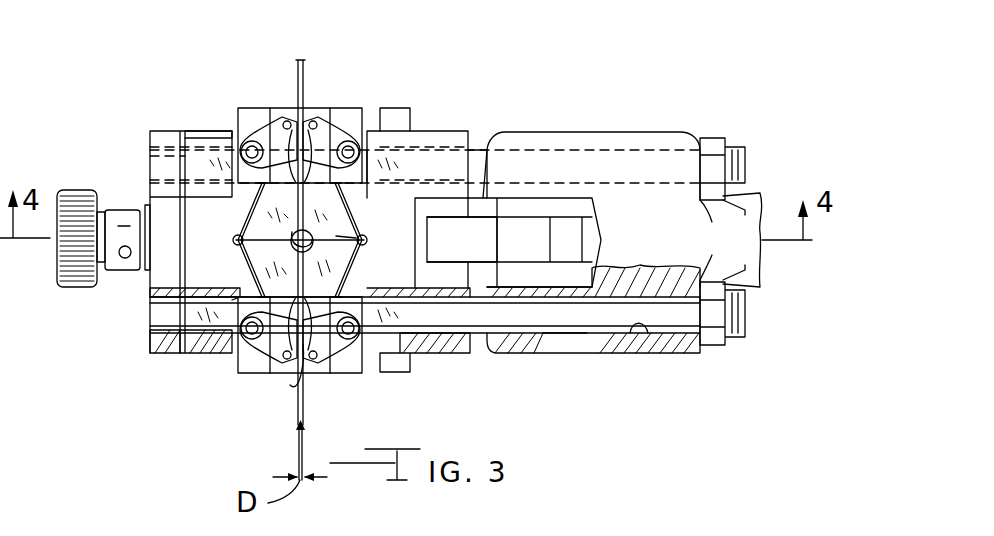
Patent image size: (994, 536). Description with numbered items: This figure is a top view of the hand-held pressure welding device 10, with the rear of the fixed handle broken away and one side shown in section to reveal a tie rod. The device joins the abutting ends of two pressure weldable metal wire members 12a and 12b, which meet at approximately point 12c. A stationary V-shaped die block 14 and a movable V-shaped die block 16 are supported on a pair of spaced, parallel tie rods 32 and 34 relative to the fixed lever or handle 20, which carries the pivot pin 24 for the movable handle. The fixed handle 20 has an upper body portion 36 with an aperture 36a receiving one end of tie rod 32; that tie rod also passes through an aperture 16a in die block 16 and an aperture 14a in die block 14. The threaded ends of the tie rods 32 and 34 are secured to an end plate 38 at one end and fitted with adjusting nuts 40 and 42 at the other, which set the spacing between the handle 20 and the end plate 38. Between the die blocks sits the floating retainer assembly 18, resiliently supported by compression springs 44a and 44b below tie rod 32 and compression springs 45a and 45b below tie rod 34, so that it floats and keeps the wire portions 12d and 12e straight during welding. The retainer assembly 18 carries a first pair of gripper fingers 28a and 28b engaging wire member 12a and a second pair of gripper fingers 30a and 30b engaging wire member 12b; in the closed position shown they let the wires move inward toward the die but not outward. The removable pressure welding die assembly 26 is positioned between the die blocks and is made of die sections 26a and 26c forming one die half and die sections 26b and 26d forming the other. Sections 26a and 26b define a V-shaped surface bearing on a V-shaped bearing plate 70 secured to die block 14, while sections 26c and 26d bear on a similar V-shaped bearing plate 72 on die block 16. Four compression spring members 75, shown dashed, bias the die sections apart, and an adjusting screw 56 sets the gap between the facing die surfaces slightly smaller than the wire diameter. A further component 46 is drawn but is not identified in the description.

The pressure welding device 10 is at (580, 95).
The wire member 12a is at (305, 420).
The wire member 12b is at (305, 70).
The abutment point 12c is at (352, 240).
The wire portion 12d is at (278, 372).
The wire portion 12e is at (370, 182).
The stationary V-shaped die block 14 is at (190, 130).
The aperture 14a is at (186, 353).
The movable V-shaped die block 16 is at (448, 131).
The aperture 16a is at (440, 320).
The floating retainer assembly 18 is at (258, 108).
The fixed lever or handle 20 is at (652, 130).
The pivot pin 24 is at (570, 238).
The pressure welding die assembly 26 is at (248, 225).
The die section 26a is at (262, 202).
The die section 26b is at (262, 270).
The die section 26c is at (340, 204).
The die section 26d is at (342, 268).
The gripper finger 28a is at (268, 345).
The gripper finger 28b is at (340, 345).
The gripper finger 30a is at (250, 140).
The gripper finger 30b is at (325, 145).
The tie rod 32 is at (510, 318).
The tie rod 34 is at (476, 160).
The upper body portion 36 is at (700, 340).
The aperture 36a is at (638, 320).
The end plate 38 is at (163, 268).
The adjusting nut 40 is at (730, 338).
The adjusting nut 42 is at (742, 150).
The compression spring 44a is at (232, 345).
The compression spring 44b is at (462, 239).
The compression spring 45a is at (205, 145).
The compression spring 45b is at (396, 143).
The adjusting block 46 is at (118, 215).
The adjusting screw 56 is at (73, 290).
The V-shaped bearing plate 70 is at (238, 245).
The V-shaped bearing plate 72 is at (360, 246).
The compression spring members 75 is at (232, 300).